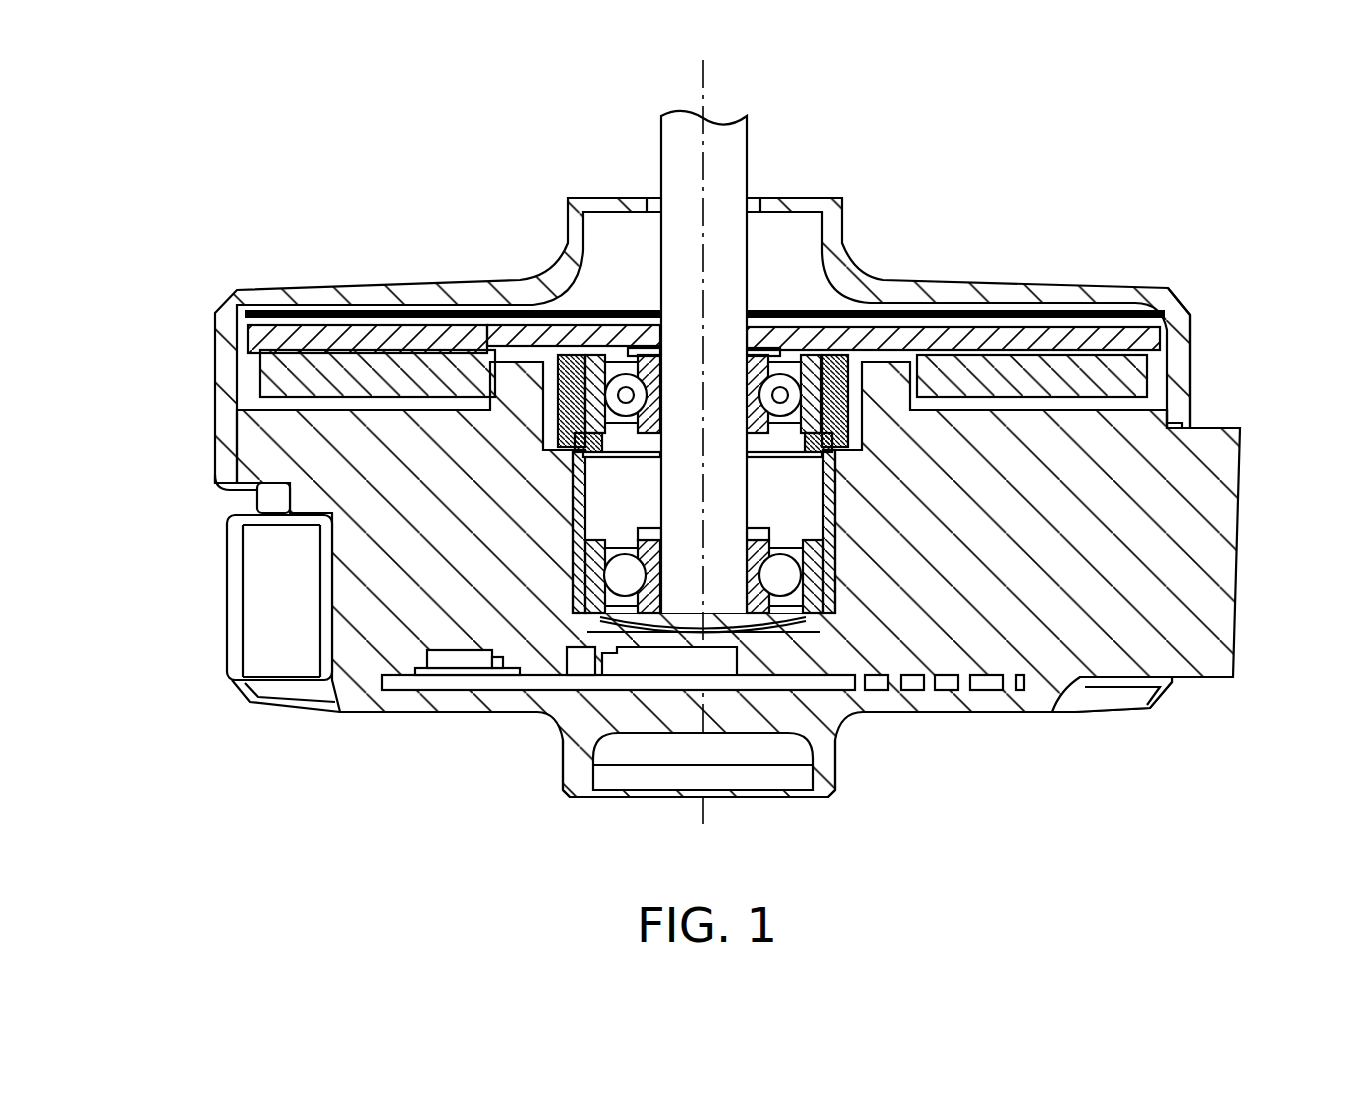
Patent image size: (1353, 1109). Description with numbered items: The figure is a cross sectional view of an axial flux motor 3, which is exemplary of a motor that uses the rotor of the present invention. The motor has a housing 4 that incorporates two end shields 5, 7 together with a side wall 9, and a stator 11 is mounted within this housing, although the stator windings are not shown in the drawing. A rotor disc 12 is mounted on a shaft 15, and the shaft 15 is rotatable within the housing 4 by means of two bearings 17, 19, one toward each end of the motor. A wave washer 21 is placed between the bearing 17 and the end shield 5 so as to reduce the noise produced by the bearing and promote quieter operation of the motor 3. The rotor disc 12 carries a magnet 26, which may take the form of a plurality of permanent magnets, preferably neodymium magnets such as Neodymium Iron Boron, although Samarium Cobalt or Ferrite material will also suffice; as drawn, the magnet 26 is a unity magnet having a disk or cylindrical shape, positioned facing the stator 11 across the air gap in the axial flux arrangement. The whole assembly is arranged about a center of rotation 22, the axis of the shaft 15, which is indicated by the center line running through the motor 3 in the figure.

The axial flux motor 3 is at (365, 197).
The housing 4 is at (1200, 305).
The end shield 5 is at (1107, 712).
The end shield 7 is at (1010, 282).
The side wall 9 is at (1213, 428).
The stator 11 is at (1100, 450).
The rotor disc 12 is at (315, 277).
The shaft 15 is at (748, 157).
The bearing 17 is at (830, 620).
The bearing 19 is at (815, 370).
The wave washer 21 is at (650, 617).
The center of rotation 22 is at (703, 72).
The magnet 26 is at (370, 385).